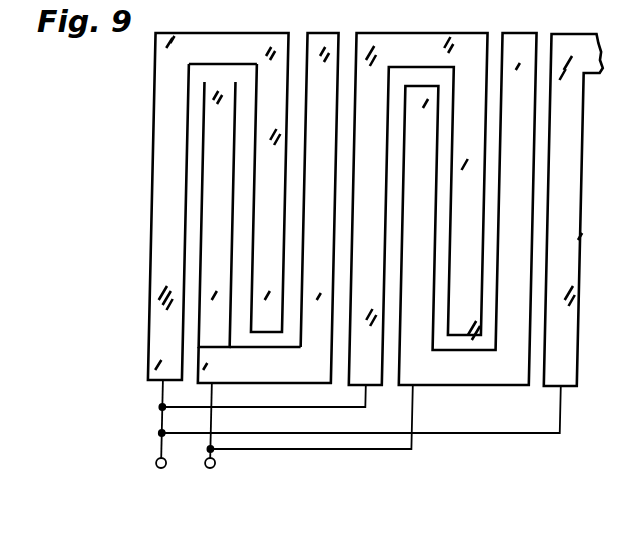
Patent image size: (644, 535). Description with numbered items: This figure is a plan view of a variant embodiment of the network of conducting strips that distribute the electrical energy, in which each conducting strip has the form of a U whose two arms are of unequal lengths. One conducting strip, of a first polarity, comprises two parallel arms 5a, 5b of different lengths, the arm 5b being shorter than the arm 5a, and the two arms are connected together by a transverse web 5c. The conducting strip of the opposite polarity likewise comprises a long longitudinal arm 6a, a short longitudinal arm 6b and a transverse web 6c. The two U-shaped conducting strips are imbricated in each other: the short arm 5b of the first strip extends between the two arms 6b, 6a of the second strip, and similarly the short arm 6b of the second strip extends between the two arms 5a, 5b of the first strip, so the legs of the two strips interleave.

The arm 5a is at (158, 205).
The arm 5b is at (263, 155).
The transverse web 5c is at (221, 40).
The long longitudinal arm 6a is at (318, 43).
The short longitudinal arm 6b is at (211, 248).
The transverse web 6c is at (259, 372).